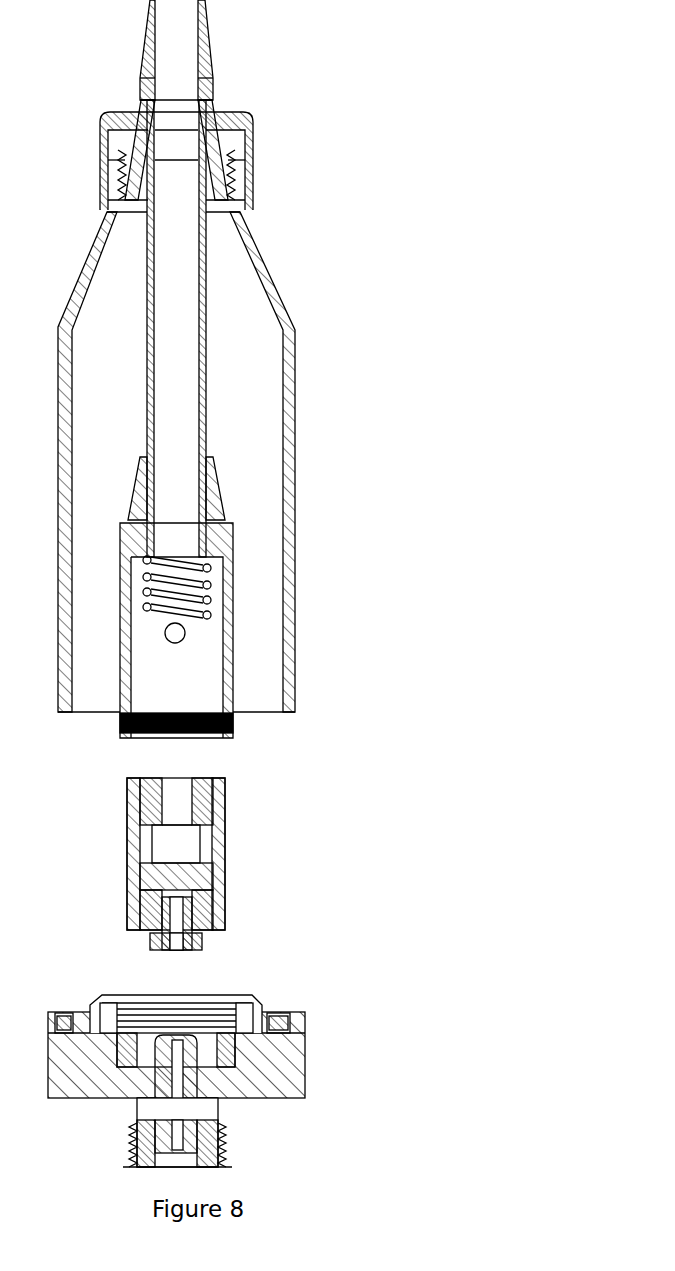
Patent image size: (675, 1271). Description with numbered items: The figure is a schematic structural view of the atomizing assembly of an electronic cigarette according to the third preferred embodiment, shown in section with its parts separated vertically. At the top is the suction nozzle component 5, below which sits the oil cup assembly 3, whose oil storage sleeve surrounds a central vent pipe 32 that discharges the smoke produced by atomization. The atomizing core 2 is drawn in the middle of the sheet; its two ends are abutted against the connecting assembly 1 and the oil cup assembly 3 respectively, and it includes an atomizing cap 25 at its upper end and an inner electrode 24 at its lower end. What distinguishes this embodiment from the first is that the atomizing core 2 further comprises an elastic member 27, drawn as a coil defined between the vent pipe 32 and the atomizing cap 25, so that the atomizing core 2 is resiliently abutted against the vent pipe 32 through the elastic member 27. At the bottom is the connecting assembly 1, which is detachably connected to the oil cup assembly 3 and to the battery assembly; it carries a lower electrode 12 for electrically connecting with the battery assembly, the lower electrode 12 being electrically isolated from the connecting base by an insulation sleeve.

The suction nozzle component 5 is at (198, 100).
The oil cup assembly 3 is at (288, 302).
The vent pipe 32 is at (207, 420).
The elastic member 27 is at (211, 603).
The atomizing cap 25 is at (210, 785).
The atomizing core 2 is at (248, 860).
The inner electrode 24 is at (200, 945).
The connecting assembly 1 is at (305, 1062).
The lower electrode 12 is at (195, 1137).